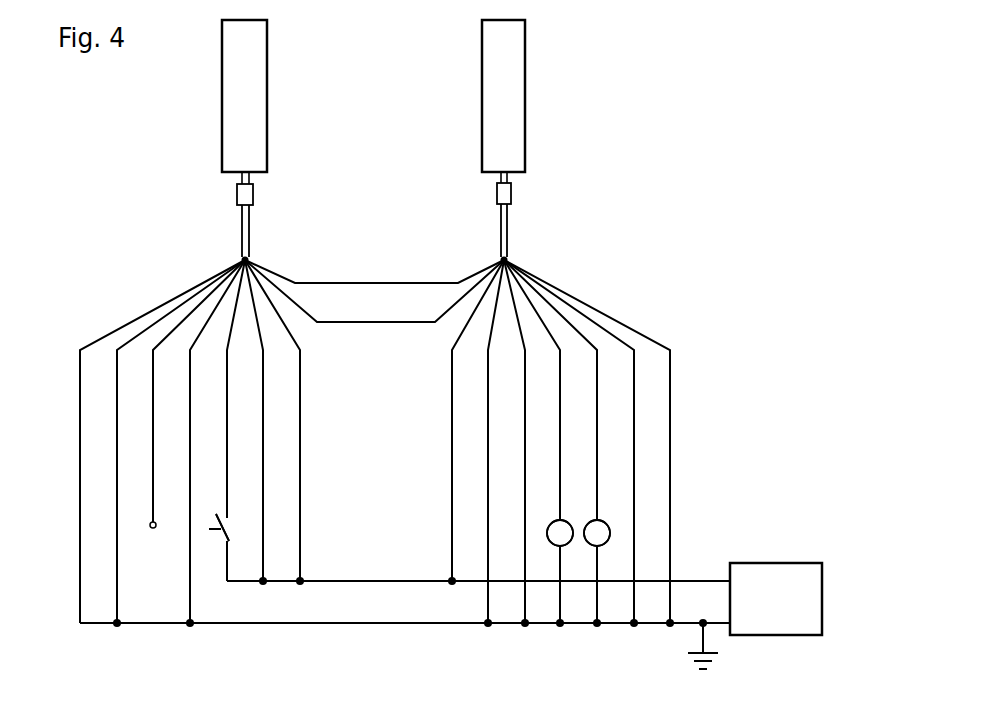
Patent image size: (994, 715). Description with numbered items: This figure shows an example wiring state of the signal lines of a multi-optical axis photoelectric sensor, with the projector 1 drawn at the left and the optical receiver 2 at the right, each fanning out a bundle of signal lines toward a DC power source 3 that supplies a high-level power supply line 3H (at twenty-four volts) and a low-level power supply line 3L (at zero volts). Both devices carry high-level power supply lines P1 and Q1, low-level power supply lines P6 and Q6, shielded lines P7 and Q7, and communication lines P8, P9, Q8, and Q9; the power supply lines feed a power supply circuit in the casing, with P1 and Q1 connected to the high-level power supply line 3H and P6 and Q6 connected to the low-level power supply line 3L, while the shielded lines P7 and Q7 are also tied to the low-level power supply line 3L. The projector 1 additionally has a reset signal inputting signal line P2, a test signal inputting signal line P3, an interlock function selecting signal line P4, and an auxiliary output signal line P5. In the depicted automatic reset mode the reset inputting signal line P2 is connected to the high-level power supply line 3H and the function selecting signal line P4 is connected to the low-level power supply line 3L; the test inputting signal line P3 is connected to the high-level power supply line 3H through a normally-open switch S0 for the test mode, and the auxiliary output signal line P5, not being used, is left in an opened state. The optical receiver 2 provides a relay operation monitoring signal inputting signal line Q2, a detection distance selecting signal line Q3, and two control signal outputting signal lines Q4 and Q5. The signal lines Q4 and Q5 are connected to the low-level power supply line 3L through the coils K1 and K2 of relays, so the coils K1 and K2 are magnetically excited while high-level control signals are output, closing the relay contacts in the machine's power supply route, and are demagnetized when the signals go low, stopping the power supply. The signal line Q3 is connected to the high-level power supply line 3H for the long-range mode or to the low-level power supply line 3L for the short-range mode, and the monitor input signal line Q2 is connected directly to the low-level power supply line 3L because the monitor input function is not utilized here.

The projector 1 is at (267, 84).
The optical receiver 2 is at (525, 84).
The DC power source 3 is at (806, 563).
The 24-V power supply line 3H is at (419, 583).
The 0-V power supply line 3L is at (363, 625).
The 24-V power supply line P1 is at (293, 333).
The reset signal inputting signal line P2 is at (255, 318).
The test signal inputting signal line P3 is at (238, 292).
The interlock function selecting signal line P4 is at (207, 323).
The auxiliary output signal line P5 is at (172, 330).
The 0-V power supply line P6 is at (137, 336).
The shielded line P7 is at (95, 341).
The communication line P8 is at (297, 281).
The communication line P9 is at (273, 270).
The 24-V power supply line Q1 is at (460, 332).
The relay operation monitoring signal inputting signal line Q2 is at (495, 318).
The detection distance selecting signal line Q3 is at (537, 273).
The control signal outputting signal line Q4 is at (543, 312).
The control signal outputting signal line Q5 is at (581, 322).
The 0-V power supply line Q6 is at (615, 323).
The shielded line Q7 is at (655, 331).
The communication line Q8 is at (458, 280).
The communication line Q9 is at (478, 270).
The normally-open switch S0 is at (215, 536).
The relay coil K1 is at (560, 533).
The relay coil K2 is at (597, 533).